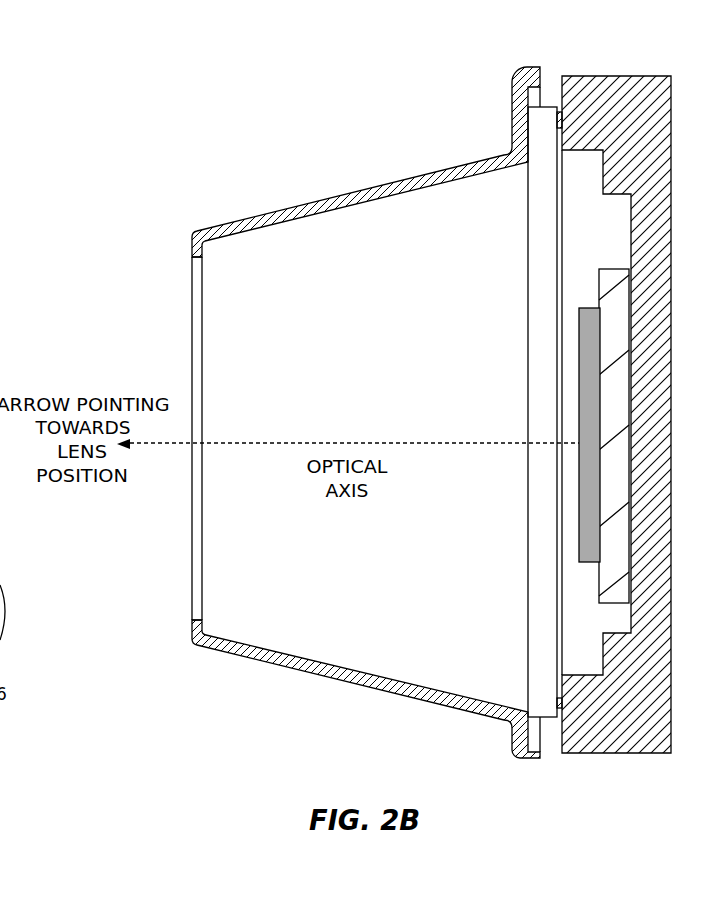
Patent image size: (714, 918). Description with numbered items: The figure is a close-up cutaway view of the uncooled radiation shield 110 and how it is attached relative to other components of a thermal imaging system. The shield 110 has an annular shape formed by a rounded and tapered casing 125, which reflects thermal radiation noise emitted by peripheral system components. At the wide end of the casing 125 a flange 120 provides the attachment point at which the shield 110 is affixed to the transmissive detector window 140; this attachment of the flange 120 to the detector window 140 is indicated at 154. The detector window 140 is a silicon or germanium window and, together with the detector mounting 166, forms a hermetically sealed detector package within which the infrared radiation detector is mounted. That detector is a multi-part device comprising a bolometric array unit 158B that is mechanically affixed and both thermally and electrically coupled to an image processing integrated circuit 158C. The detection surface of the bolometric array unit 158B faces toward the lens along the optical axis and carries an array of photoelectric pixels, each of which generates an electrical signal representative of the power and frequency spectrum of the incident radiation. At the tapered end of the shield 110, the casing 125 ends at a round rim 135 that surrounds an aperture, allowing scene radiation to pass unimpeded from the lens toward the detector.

The uncooled radiation shield 110 is at (366, 432).
The flange 120 is at (512, 113).
The casing 125 is at (313, 213).
The round rim 135 is at (200, 636).
The transmissive detector window 140 is at (528, 300).
The attachment of the flange to the detector window 154 is at (526, 170).
The bolometric array unit 158B is at (594, 565).
The image processing integrated circuit 158C is at (600, 268).
The detector mounting 166 is at (620, 755).